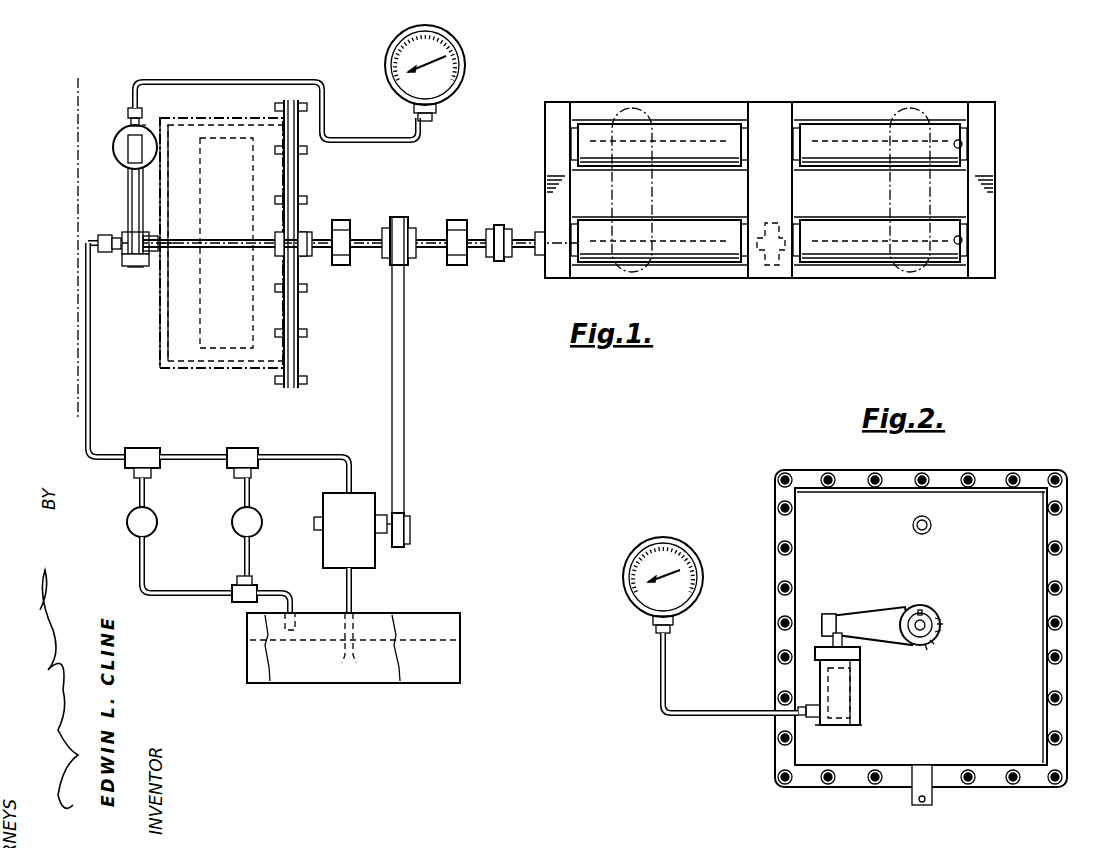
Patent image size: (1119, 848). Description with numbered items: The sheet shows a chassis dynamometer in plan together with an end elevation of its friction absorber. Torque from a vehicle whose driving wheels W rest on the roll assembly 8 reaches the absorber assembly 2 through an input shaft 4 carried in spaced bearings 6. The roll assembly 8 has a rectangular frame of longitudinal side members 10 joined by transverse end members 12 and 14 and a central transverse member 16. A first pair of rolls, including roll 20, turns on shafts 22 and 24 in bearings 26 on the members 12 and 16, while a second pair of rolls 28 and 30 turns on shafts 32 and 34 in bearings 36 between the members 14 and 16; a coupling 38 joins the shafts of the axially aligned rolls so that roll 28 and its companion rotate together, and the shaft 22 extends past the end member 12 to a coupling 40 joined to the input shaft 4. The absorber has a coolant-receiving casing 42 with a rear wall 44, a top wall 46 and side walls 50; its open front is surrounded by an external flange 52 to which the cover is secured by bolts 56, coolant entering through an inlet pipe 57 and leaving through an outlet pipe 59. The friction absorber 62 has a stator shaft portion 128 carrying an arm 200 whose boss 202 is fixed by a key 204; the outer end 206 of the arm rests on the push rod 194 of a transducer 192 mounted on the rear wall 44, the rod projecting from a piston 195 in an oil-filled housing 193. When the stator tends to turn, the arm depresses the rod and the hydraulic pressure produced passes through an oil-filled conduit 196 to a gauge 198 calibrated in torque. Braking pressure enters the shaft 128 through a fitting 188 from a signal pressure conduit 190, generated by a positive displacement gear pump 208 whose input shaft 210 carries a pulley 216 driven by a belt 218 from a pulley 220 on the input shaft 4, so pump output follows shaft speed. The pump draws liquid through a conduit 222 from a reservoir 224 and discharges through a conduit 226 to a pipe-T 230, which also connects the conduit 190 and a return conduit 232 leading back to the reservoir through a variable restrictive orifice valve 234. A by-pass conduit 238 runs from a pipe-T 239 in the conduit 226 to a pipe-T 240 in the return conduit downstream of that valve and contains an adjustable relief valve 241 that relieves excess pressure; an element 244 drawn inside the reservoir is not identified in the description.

In FIG. 1, the absorber assembly 2 is at (75, 85).
In FIG. 1, the input shaft 4 is at (372, 238).
In FIG. 1, the bearings 6 is at (341, 266).
In FIG. 1, the roll assembly 8 is at (947, 94).
In FIG. 1, the longitudinal side members 10 is at (872, 104).
In FIG. 1, the transverse end member 12 is at (552, 112).
In FIG. 1, the transverse end member 14 is at (990, 123).
In FIG. 1, the central transverse member 16 is at (780, 110).
In FIG. 1, the roll 20 is at (716, 128).
In FIG. 1, the shaft 22 is at (517, 253).
In FIG. 1, the shaft 24 is at (740, 148).
In FIG. 1, the bearings 26 is at (570, 243).
In FIG. 1, the roll 28 is at (870, 232).
In FIG. 1, the roll 30 is at (852, 158).
In FIG. 1, the shaft 32 is at (958, 245).
In FIG. 1, the shaft 34 is at (955, 140).
In FIG. 1, the bearings 36 is at (810, 128).
In FIG. 1, the coupling 38 is at (764, 262).
In FIG. 1, the coupling 40 is at (498, 230).
In FIG. 1, the coolant-receiving casing 42 is at (272, 180).
In FIG. 2, the coolant-receiving casing 42 is at (1042, 528).
In FIG. 1, the rear wall 44 is at (166, 310).
In FIG. 2, the rear wall 44 is at (976, 515).
In FIG. 1, the top wall 46 is at (176, 322).
In FIG. 1, the side walls 50 is at (218, 120).
In FIG. 2, the side walls 50 is at (1050, 605).
In FIG. 2, the external flange 52 is at (1032, 470).
In FIG. 2, the bolts 56 is at (826, 473).
In FIG. 2, the inlet pipe 57 is at (935, 792).
In FIG. 1, the outlet pipe 59 is at (155, 240).
In FIG. 2, the outlet pipe 59 is at (913, 522).
In FIG. 1, the friction absorber 62 is at (240, 146).
In FIG. 2, the cylindrical shaft portion 128 is at (930, 632).
In FIG. 1, the fitting 188 is at (108, 236).
In FIG. 2, the fitting 188 is at (926, 622).
In FIG. 1, the conduit 190 is at (98, 365).
In FIG. 1, the transducer 192 is at (149, 124).
In FIG. 2, the transducer 192 is at (866, 699).
In FIG. 1, the housing 193 is at (122, 130).
In FIG. 2, the housing 193 is at (862, 672).
In FIG. 1, the push rod 194 is at (132, 172).
In FIG. 2, the push rod 194 is at (858, 645).
In FIG. 2, the piston 195 is at (866, 726).
In FIG. 1, the conduit 196 is at (210, 78).
In FIG. 2, the conduit 196 is at (670, 672).
In FIG. 1, the gauge 198 is at (464, 70).
In FIG. 2, the gauge 198 is at (668, 538).
In FIG. 1, the arm 200 is at (126, 182).
In FIG. 2, the arm 200 is at (848, 614).
In FIG. 1, the boss 202 is at (127, 262).
In FIG. 2, the boss 202 is at (932, 640).
In FIG. 2, the key 204 is at (922, 610).
In FIG. 1, the outer end 206 is at (136, 148).
In FIG. 2, the outer end 206 is at (822, 620).
In FIG. 1, the positive displacement gear pump 208 is at (376, 560).
In FIG. 1, the input shaft 210 is at (411, 528).
In FIG. 1, the pulley 216 is at (406, 543).
In FIG. 1, the belt 218 is at (405, 362).
In FIG. 1, the pulley 220 is at (407, 226).
In FIG. 1, the conduit 222 is at (362, 590).
In FIG. 1, the reservoir 224 is at (470, 650).
In FIG. 1, the conduit 226 is at (323, 452).
In FIG. 1, the pipe-T 230 is at (146, 448).
In FIG. 1, the return conduit 232 is at (147, 488).
In FIG. 1, the variable restrictive orifice valve 234 is at (158, 530).
In FIG. 1, the by-pass conduit 238 is at (250, 489).
In FIG. 1, the pipe-T 239 is at (253, 448).
In FIG. 1, the pipe-T 240 is at (234, 600).
In FIG. 1, the adjustable relief valve 241 is at (263, 532).
In FIG. 1, the fluid 244 is at (426, 672).
In FIG. 1, the driving wheels W is at (632, 108).